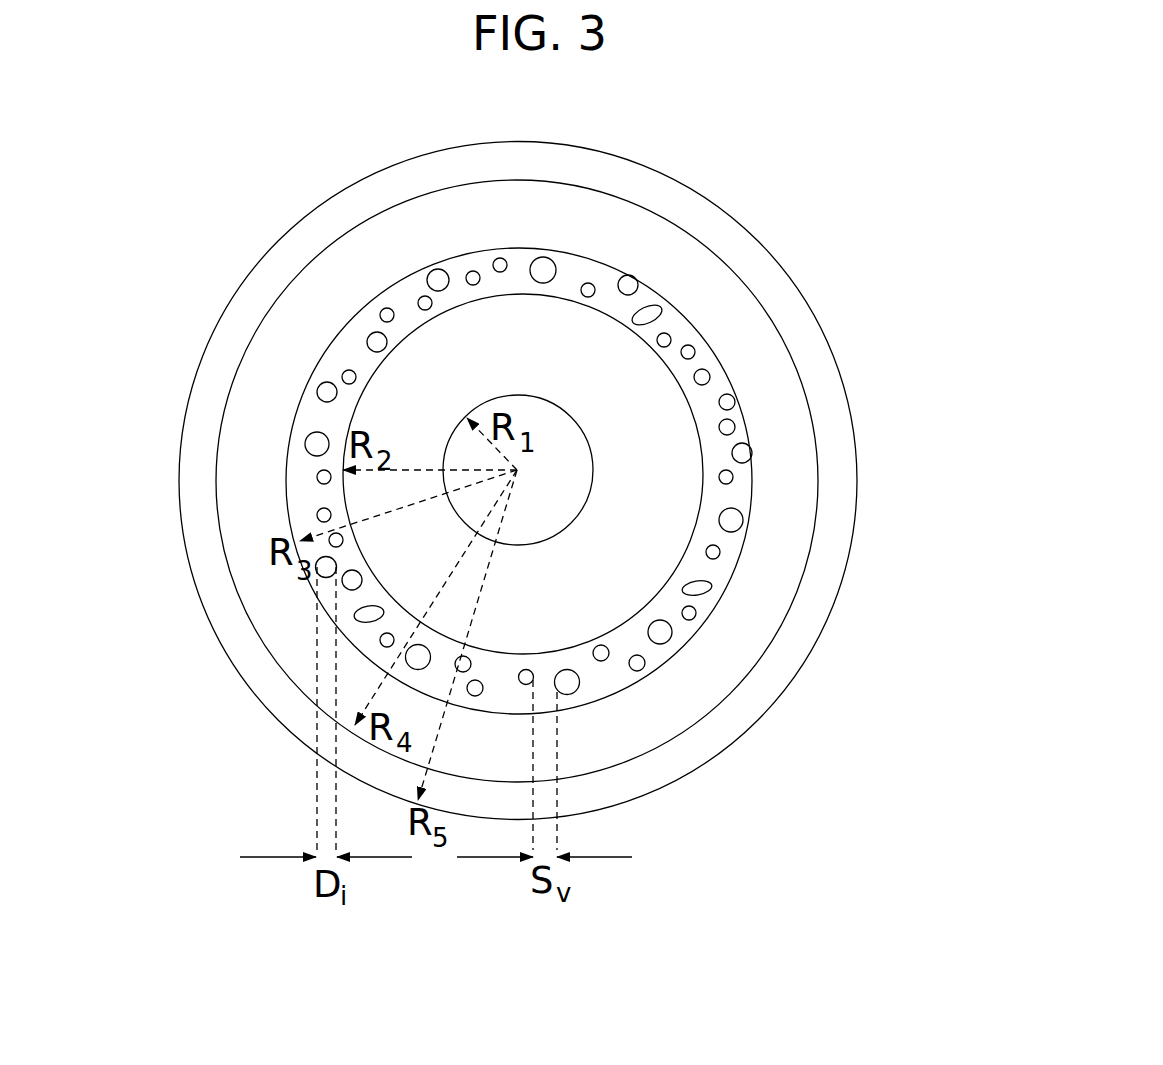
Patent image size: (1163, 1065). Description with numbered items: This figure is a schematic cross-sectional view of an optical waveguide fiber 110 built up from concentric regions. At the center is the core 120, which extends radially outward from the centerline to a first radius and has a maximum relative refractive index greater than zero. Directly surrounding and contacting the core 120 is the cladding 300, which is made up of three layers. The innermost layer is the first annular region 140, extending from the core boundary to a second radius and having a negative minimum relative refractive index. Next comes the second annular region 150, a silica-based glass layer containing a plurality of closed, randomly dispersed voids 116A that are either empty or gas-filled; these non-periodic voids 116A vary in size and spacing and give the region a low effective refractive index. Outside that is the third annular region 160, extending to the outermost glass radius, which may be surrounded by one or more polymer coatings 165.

The optical waveguide fiber 110 is at (720, 168).
The voids 116A is at (748, 452).
The core 120 is at (532, 494).
The first annular region 140 is at (545, 561).
The second annular region 150 is at (608, 651).
The third annular region 160 is at (597, 732).
The polymer coatings 165 is at (635, 785).
The cladding 300 is at (1052, 520).